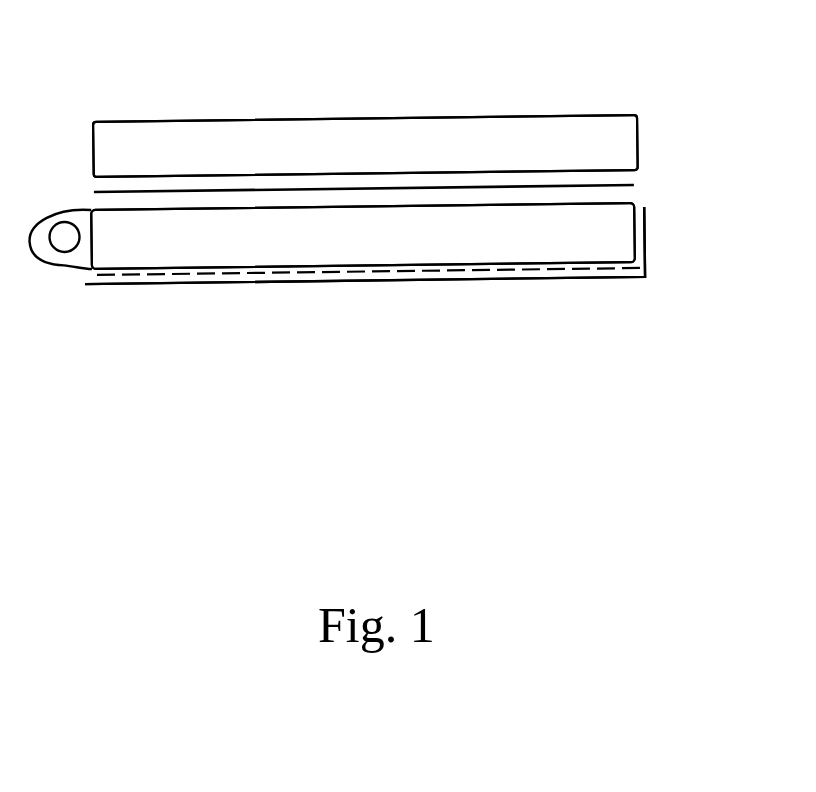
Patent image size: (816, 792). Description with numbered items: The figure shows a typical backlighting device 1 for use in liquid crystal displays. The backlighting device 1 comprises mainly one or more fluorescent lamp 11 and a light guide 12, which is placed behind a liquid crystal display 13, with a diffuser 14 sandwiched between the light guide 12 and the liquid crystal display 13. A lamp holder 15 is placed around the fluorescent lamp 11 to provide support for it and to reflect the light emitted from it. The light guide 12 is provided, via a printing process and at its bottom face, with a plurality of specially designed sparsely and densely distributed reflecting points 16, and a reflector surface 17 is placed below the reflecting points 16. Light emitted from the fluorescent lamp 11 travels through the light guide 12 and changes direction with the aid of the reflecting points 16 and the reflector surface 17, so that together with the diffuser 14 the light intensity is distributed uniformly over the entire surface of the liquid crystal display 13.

The backlighting device 1 is at (639, 65).
The fluorescent lamp 11 is at (103, 286).
The light guide 12 is at (645, 237).
The liquid crystal display 13 is at (647, 125).
The diffuser 14 is at (672, 161).
The lamp holder 15 is at (69, 297).
The reflecting points 16 is at (503, 298).
The reflector surface 17 is at (417, 323).